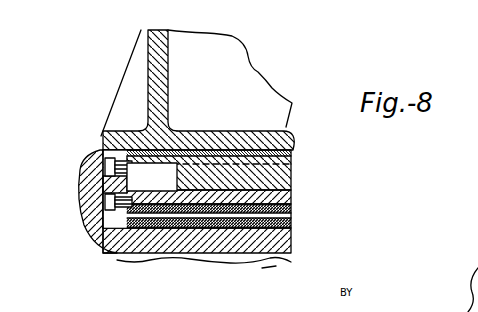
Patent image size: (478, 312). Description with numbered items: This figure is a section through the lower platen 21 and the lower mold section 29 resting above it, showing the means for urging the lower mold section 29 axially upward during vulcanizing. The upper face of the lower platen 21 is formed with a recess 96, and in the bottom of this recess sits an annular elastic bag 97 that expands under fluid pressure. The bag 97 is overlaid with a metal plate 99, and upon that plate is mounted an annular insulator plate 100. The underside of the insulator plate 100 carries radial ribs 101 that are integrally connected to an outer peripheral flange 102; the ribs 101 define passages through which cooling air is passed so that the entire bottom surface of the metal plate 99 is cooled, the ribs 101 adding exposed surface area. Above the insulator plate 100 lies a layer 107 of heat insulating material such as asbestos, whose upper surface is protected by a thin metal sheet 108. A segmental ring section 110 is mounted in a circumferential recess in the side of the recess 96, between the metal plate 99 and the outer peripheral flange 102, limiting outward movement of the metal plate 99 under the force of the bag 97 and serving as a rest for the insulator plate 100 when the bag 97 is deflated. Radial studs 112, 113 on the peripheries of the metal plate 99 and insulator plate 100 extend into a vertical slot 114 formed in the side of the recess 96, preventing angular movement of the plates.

The lower mold section 29 is at (150, 47).
The vertical slot 114 is at (104, 137).
The thin metal sheet 108 is at (290, 127).
The layer of heat insulating material 107 is at (291, 152).
The insulator plate 100 is at (284, 162).
The radial ribs 101 is at (284, 180).
The metal plate 99 is at (289, 203).
The radial stud 112 is at (100, 213).
The recess 96 is at (200, 229).
The annular elastic bag 97 is at (294, 229).
The lower platen 21 is at (134, 240).
The radial stud 113 is at (84, 168).
The segmental ring section 110 is at (82, 190).
The outer peripheral flange 102 is at (131, 183).